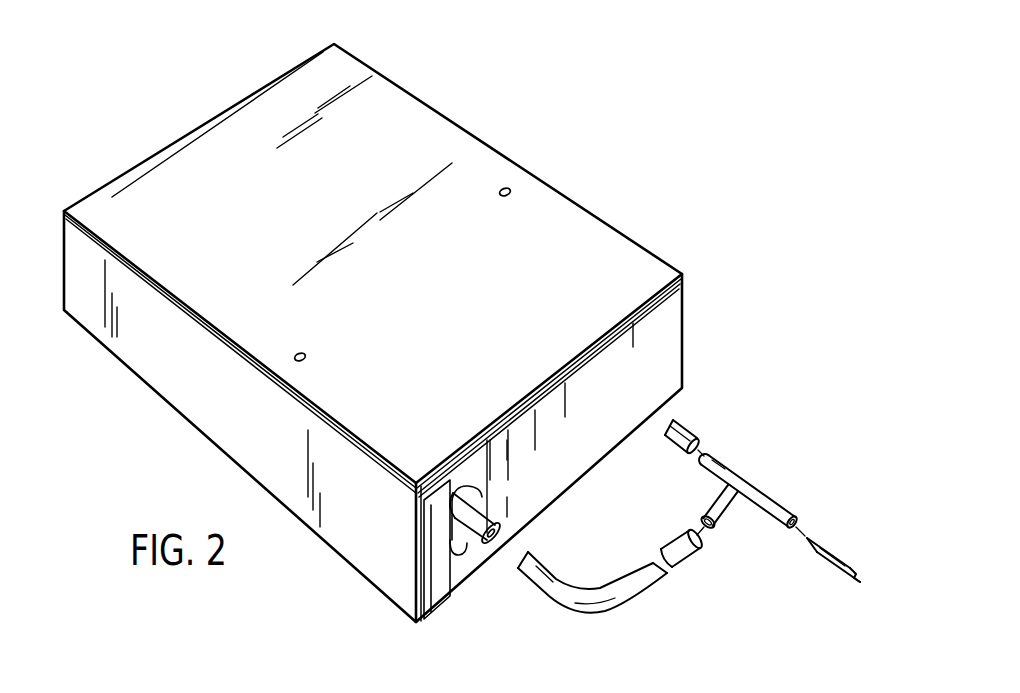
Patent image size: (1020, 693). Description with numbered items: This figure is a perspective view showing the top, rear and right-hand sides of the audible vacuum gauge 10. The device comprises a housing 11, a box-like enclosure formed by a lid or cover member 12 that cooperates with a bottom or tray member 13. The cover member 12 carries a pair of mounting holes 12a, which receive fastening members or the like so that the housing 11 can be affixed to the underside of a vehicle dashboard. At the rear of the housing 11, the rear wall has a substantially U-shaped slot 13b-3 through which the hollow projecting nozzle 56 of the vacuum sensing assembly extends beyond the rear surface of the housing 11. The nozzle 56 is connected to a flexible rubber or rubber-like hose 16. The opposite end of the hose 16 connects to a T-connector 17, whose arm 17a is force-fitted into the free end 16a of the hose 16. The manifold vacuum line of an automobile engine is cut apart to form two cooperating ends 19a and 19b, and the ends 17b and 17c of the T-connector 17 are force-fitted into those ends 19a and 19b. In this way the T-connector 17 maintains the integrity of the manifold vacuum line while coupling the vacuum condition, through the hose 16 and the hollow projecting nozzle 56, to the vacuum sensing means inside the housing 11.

The audible vacuum gauge 10 is at (728, 320).
The housing 11 is at (418, 74).
The lid or cover member 12 is at (557, 218).
The mounting holes 12a is at (500, 196).
The bottom or tray member 13 is at (673, 307).
The U-shaped slot 13b-3 is at (466, 548).
The hollow projecting nozzle 56 is at (477, 550).
The hose 16 is at (543, 570).
The free end of hose 16a is at (693, 552).
The T-connector 17 is at (672, 507).
The arm of T-connector 17a is at (715, 527).
The end of T-connector 17b is at (787, 513).
The end of T-connector 17c is at (718, 460).
The end of manifold vacuum line 19a is at (813, 533).
The end of manifold vacuum line 19b is at (703, 444).